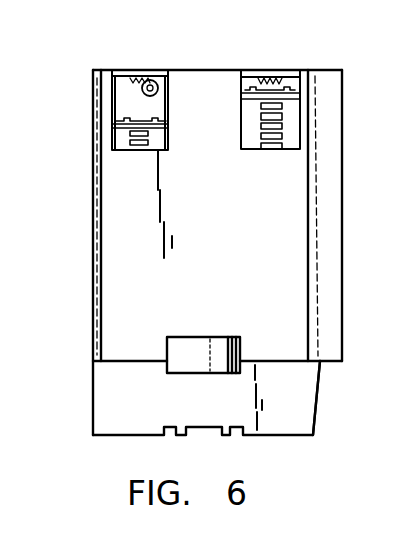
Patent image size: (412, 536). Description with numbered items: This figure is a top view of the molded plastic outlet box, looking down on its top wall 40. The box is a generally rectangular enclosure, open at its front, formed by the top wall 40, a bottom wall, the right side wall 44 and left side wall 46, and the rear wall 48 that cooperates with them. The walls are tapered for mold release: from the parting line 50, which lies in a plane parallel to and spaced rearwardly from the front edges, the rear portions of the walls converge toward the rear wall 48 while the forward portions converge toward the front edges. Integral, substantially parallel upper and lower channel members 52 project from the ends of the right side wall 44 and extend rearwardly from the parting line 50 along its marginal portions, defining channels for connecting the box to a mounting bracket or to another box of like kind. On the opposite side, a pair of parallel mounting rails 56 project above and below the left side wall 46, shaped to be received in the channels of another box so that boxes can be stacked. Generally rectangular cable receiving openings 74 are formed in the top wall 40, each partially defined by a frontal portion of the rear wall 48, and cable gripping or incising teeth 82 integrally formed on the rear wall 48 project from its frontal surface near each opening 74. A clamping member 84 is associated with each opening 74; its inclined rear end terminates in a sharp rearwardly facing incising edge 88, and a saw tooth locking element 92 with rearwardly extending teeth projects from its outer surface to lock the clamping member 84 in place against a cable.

The top wall 40 is at (280, 268).
The right side wall 44 is at (318, 201).
The left side wall 46 is at (96, 215).
The rear wall 48 is at (205, 69).
The parting line 50 is at (273, 362).
The channel member 52 is at (330, 305).
The mounting rail 56 is at (93, 190).
The cable receiving opening 74 is at (114, 89).
The cable gripping or incising teeth 82 is at (146, 92).
The clamping member 84 is at (116, 135).
The incising edge 88 is at (137, 119).
The saw tooth locking element 92 is at (140, 146).